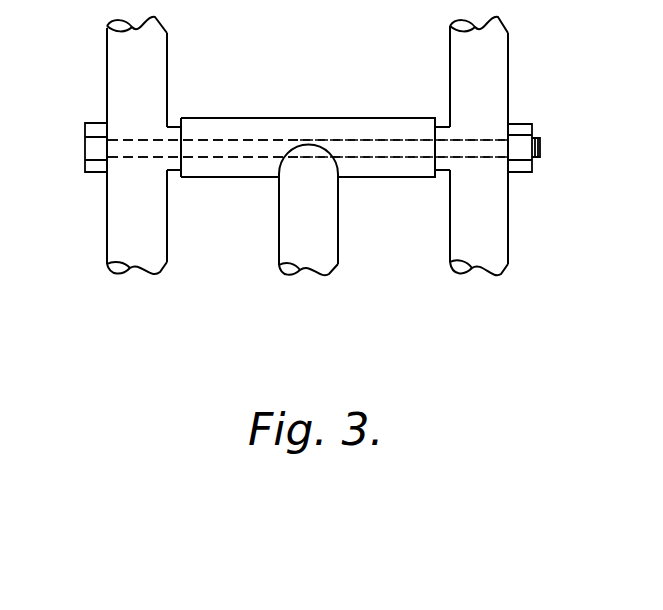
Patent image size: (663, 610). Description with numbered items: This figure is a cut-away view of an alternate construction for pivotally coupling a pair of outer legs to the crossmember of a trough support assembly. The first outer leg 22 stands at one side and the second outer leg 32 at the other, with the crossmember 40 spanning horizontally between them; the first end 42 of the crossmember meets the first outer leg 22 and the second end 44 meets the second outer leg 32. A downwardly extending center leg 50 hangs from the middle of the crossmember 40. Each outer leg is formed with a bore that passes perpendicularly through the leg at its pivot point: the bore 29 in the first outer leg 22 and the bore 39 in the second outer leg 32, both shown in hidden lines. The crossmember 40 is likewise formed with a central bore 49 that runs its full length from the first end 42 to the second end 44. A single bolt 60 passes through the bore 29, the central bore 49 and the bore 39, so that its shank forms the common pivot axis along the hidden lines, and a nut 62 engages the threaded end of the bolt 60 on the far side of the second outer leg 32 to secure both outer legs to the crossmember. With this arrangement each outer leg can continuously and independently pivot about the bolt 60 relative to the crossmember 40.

The first outer leg 22 is at (114, 222).
The second outer leg 32 is at (503, 222).
The crossmember 40 is at (292, 128).
The first end of the crossmember 42 is at (203, 128).
The second end of the crossmember 44 is at (424, 128).
The central bore 49 is at (237, 162).
The center leg 50 is at (333, 220).
The bore 29 is at (123, 138).
The bore 39 is at (480, 138).
The bolt 60 is at (97, 172).
The nut 62 is at (530, 172).